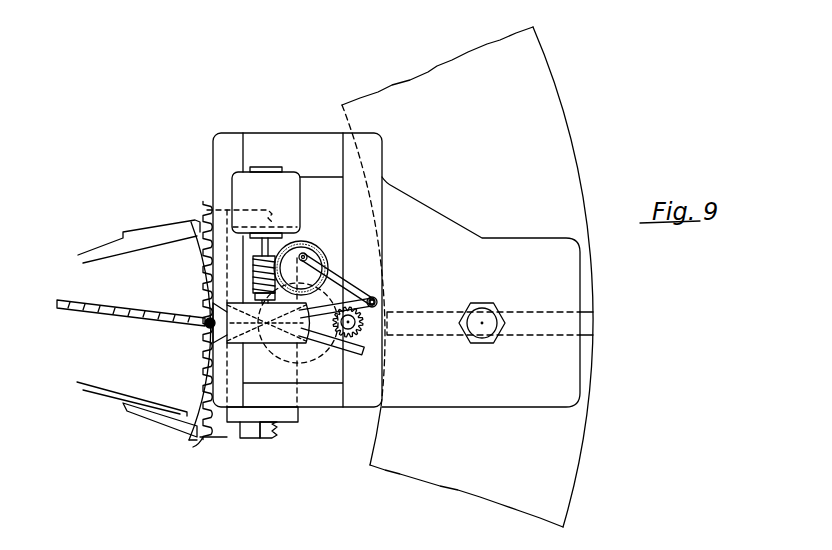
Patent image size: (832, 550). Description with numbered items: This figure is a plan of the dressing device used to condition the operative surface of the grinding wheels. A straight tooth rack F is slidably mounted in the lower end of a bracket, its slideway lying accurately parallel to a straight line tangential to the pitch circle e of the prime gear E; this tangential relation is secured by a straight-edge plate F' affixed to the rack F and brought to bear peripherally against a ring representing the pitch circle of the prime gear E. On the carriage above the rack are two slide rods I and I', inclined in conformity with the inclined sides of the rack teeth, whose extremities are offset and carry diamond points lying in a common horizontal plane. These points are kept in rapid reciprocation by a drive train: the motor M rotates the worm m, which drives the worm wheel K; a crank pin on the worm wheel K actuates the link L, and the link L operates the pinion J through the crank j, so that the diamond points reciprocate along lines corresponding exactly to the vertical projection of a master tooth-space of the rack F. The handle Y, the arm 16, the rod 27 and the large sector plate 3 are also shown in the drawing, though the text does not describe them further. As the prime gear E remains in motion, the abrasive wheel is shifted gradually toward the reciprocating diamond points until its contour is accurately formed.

The sector plate 3 is at (582, 463).
The rod 27 is at (595, 326).
The motor M is at (266, 211).
The worm m is at (253, 269).
The worm wheel K is at (306, 250).
The link L is at (346, 279).
The slide rod I is at (351, 297).
The slide rod I' is at (334, 356).
The crank j is at (372, 309).
The pinion J is at (364, 330).
The handle lever Y is at (148, 322).
The prime gear E is at (177, 413).
The bracket arm 16 is at (139, 304).
The pitch circle e is at (195, 434).
The straight tooth rack F is at (266, 447).
The straight-edge plate F' is at (230, 447).